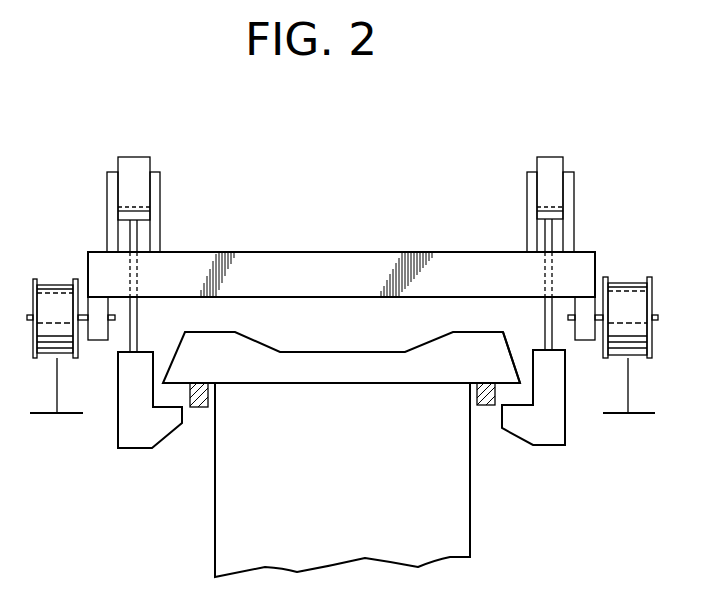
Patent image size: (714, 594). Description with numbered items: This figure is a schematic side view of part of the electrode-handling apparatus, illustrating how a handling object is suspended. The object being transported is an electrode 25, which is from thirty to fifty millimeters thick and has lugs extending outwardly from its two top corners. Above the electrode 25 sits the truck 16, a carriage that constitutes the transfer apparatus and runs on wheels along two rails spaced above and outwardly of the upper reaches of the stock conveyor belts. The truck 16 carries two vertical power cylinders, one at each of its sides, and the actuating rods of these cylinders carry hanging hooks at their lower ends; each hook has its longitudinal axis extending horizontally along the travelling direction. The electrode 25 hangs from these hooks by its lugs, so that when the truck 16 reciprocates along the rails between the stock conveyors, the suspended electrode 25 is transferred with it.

The truck 16 is at (392, 244).
The electrode 25 is at (457, 528).